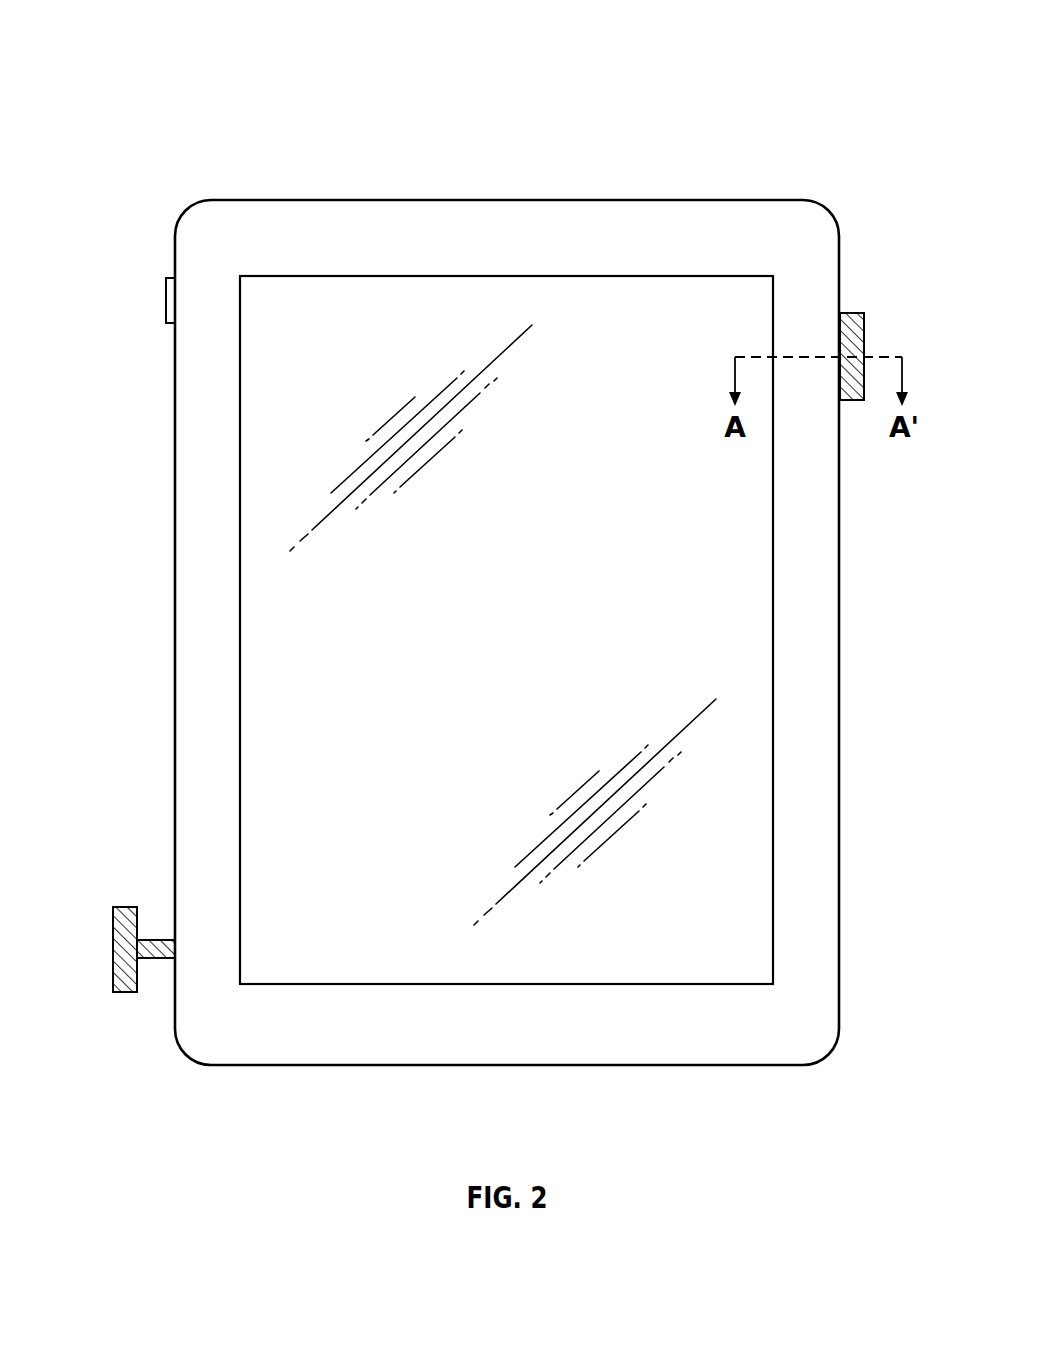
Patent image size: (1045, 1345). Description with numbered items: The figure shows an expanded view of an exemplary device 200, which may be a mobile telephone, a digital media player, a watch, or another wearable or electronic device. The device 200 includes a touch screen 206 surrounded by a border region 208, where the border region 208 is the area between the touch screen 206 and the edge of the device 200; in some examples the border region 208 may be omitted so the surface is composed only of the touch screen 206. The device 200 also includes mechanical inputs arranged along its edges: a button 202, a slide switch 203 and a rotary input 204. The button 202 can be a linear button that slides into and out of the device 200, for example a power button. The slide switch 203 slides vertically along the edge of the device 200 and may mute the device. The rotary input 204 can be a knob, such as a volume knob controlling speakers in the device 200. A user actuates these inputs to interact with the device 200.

The device 200 is at (192, 80).
The button 202 is at (848, 313).
The slide switch 203 is at (166, 288).
The rotary input 204 is at (125, 993).
The touch screen 206 is at (265, 483).
The border region 208 is at (818, 937).